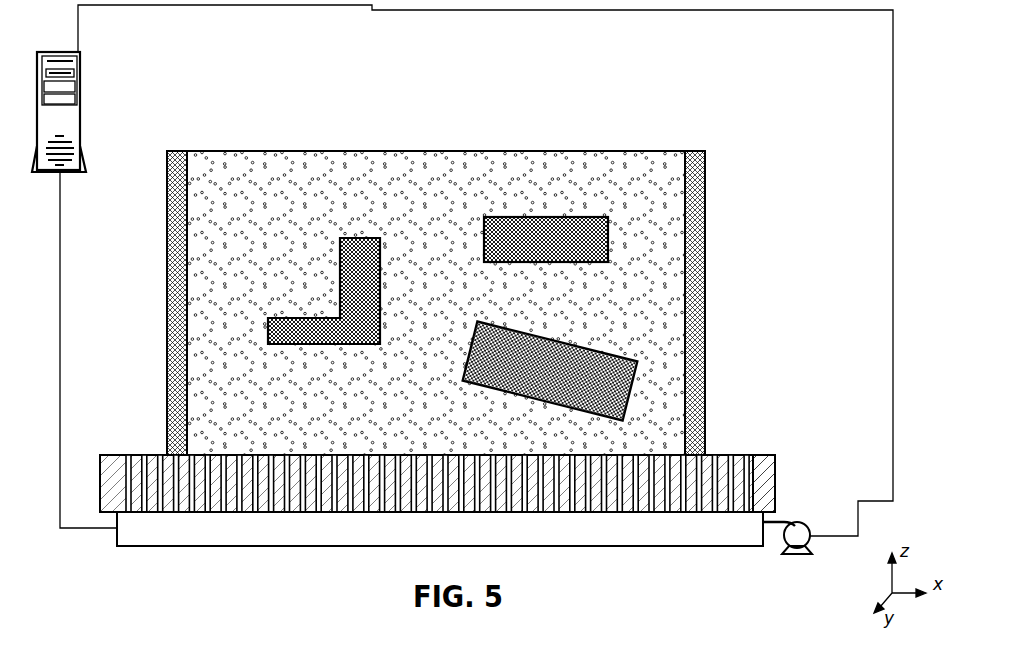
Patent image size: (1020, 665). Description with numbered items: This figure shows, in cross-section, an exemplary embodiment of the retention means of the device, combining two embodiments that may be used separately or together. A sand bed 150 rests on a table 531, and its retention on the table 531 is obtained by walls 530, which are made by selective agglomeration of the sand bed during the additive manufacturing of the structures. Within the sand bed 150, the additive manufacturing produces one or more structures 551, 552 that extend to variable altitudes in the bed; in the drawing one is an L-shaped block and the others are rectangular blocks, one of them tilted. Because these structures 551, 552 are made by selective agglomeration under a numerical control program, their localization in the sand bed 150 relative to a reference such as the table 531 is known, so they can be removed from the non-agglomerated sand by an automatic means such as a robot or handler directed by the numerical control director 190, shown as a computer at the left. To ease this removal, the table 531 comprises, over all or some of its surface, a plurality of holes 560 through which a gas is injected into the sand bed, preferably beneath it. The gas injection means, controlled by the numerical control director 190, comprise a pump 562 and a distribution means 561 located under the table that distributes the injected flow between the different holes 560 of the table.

The numerical control director 190 is at (80, 77).
The sand bed 150 is at (647, 286).
The walls 530 is at (705, 220).
The structure 551 is at (340, 290).
The structure 552 is at (515, 217).
The holes 560 is at (770, 455).
The table 531 is at (777, 472).
The distribution means 561 is at (175, 548).
The pump 562 is at (797, 555).